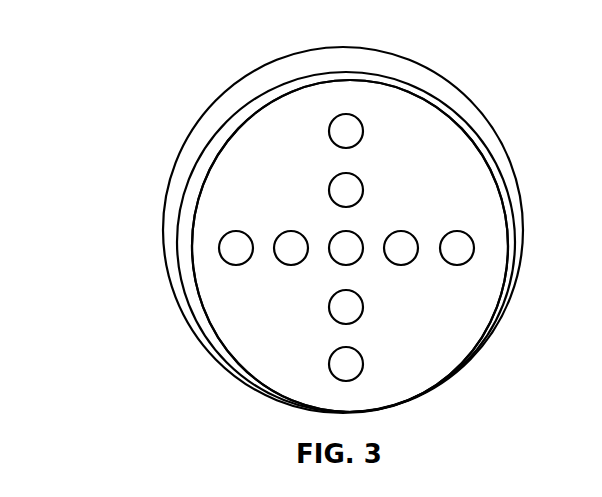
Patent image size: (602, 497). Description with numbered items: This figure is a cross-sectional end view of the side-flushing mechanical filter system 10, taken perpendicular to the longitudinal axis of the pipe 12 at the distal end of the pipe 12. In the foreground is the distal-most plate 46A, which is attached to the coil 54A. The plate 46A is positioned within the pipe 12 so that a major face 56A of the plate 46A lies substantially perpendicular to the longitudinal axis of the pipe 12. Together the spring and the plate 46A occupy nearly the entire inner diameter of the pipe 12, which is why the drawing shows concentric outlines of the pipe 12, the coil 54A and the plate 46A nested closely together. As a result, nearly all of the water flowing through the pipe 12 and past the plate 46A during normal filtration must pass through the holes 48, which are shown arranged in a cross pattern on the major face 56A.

The side-flushing mechanical filter system 10 is at (463, 68).
The pipe 12 is at (489, 118).
The coil 54A is at (500, 156).
The distal-most plate 46A is at (500, 213).
The major face 56A is at (483, 295).
The holes 48 is at (352, 193).